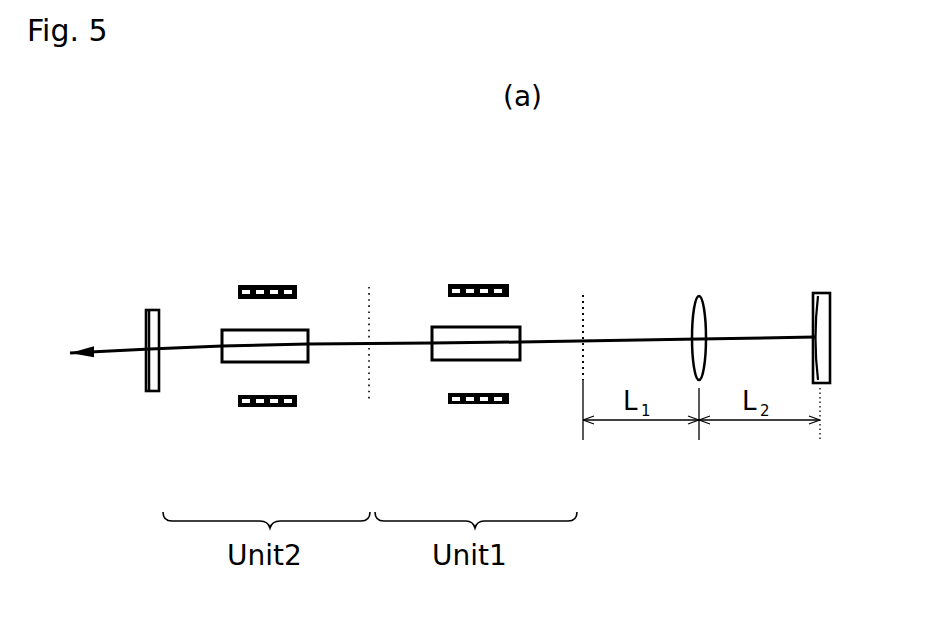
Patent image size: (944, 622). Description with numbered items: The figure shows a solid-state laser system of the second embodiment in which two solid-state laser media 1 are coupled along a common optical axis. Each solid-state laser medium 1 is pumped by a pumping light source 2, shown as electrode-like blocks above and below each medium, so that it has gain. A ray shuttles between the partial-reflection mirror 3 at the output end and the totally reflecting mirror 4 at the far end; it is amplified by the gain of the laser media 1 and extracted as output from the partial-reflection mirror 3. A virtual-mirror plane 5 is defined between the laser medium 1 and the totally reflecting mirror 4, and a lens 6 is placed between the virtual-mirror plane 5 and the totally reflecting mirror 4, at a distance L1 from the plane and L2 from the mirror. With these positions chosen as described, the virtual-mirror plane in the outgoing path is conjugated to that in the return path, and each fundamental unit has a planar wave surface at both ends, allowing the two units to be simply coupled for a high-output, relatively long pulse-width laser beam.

The solid-state laser medium 1 is at (303, 328).
The pumping light source 2 is at (260, 285).
The partial-reflection mirror 3 is at (150, 308).
The totally reflecting mirror 4 is at (820, 290).
The virtual-mirror plane 5 is at (583, 287).
The lens 6 is at (697, 287).